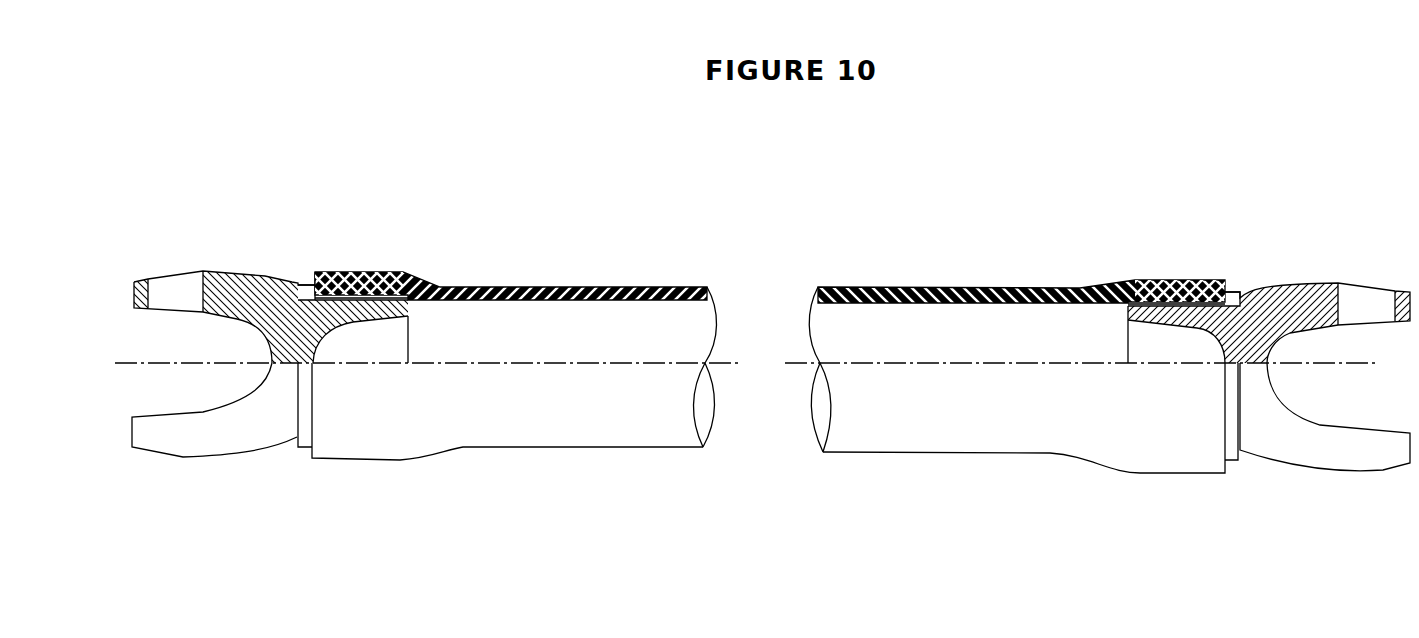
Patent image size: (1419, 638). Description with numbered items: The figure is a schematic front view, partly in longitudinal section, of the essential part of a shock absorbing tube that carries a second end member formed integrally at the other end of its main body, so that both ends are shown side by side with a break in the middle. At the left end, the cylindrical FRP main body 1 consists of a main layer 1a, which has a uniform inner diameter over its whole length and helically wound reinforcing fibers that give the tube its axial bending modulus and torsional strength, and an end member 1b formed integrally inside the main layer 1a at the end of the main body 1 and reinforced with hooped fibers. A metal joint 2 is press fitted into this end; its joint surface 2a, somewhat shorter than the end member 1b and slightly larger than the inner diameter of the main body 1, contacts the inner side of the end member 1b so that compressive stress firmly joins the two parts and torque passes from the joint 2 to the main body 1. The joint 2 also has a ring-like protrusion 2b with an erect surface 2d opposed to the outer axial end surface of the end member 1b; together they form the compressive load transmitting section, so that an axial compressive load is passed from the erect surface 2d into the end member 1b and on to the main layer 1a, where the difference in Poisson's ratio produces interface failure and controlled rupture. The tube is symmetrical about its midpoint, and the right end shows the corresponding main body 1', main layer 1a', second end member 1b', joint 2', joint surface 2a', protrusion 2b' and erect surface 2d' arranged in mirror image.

The main body 1 is at (507, 404).
The main layer 1a is at (511, 262).
The end member 1b is at (361, 250).
The joint 2 is at (270, 401).
The joint surface 2a is at (376, 287).
The ring-like protrusion 2b is at (292, 252).
The erect surface 2d is at (361, 252).
The shaft (second end) 1' is at (1023, 408).
The outer fiber-reinforced layer of shaft (second end) 1a' is at (1021, 262).
The end portion of outer layer over sleeve (second end) 1b' is at (1179, 254).
The yoke (second end) 2' is at (1269, 424).
The cylindrical sleeve portion of yoke (second end) 2a' is at (1153, 287).
The stepped shoulder of yoke (second end) 2b' is at (1251, 258).
The adhesive layer (second end) 2d' is at (1176, 256).